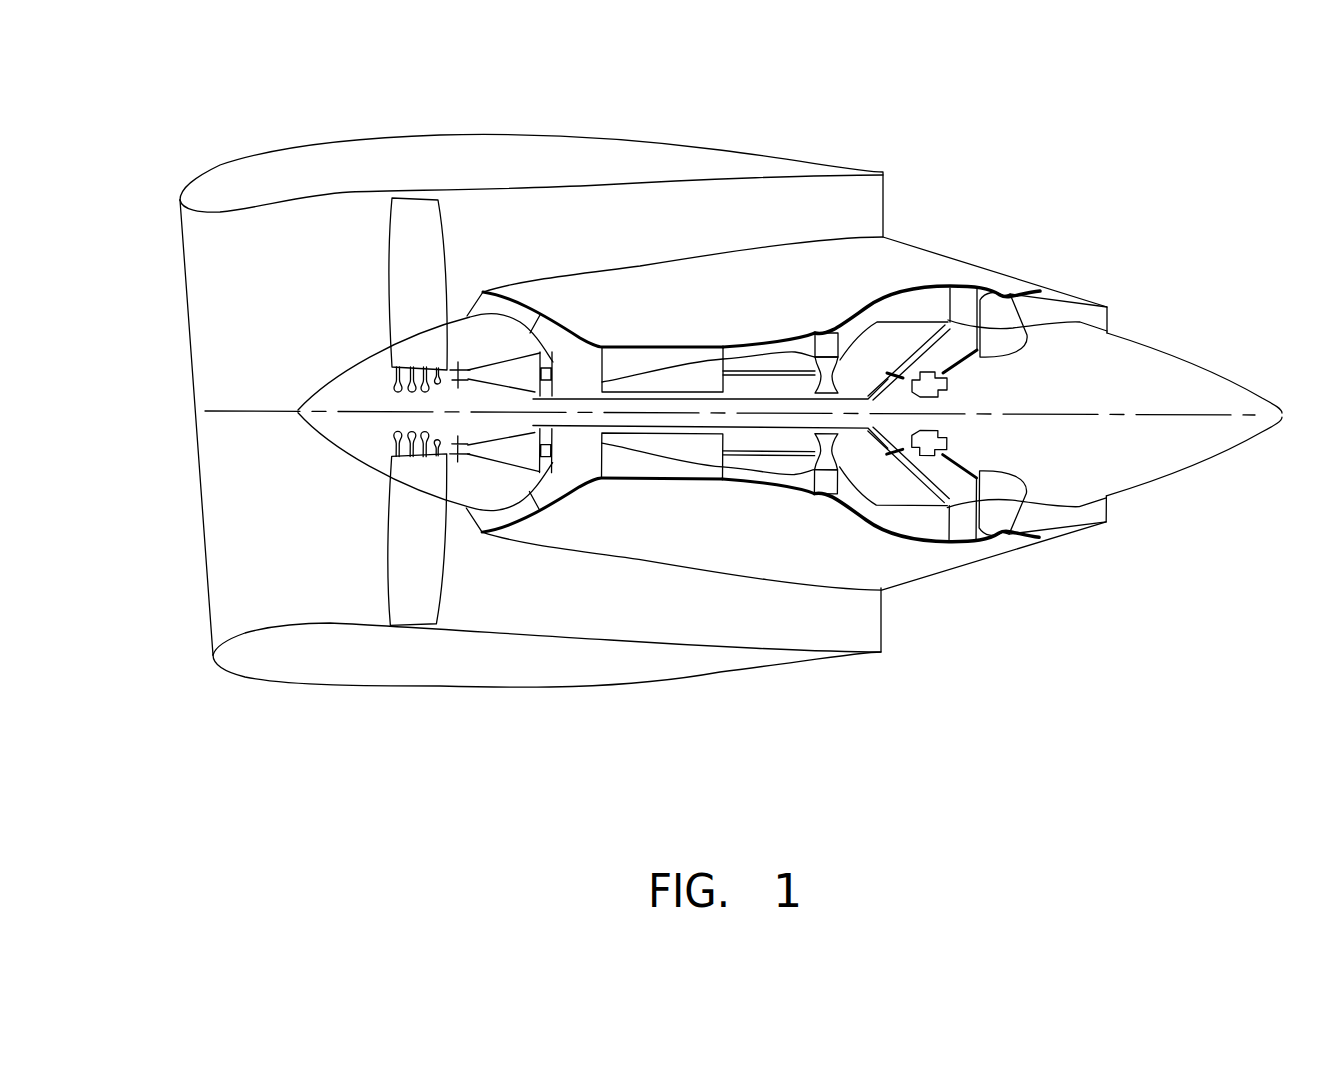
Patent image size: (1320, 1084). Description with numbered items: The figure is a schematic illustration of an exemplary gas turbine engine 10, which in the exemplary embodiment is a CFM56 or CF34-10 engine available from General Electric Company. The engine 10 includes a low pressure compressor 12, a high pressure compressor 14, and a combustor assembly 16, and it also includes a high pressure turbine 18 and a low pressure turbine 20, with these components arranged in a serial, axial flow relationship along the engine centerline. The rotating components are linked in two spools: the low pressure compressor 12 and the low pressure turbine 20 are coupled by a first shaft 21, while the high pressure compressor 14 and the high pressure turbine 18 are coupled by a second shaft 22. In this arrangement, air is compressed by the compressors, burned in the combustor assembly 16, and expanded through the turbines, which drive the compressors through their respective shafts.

The gas turbine engine 10 is at (800, 128).
The low pressure compressor 12 is at (422, 540).
The high pressure compressor 14 is at (621, 357).
The combustor assembly 16 is at (787, 353).
The high pressure turbine 18 is at (827, 488).
The low pressure turbine 20 is at (912, 302).
The first shaft 21 is at (575, 445).
The second shaft 22 is at (803, 378).